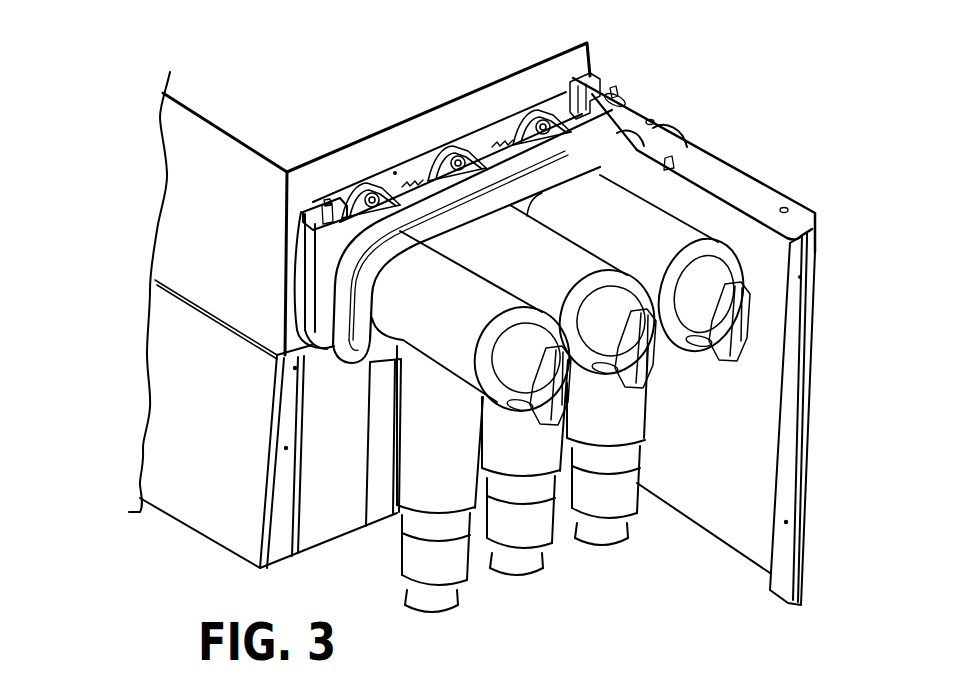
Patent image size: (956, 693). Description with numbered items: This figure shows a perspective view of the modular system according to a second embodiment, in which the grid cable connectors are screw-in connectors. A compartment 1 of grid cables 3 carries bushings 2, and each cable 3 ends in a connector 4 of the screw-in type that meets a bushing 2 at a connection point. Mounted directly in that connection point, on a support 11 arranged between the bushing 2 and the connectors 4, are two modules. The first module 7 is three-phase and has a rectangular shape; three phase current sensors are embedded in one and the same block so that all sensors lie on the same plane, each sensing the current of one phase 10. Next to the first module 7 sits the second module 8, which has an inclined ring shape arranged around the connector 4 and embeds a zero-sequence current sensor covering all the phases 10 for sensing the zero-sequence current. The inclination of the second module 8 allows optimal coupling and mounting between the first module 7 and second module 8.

The compartment 1 is at (320, 428).
The bushing 2 is at (413, 176).
The grid cable 3 is at (607, 510).
The connector 4 is at (633, 230).
The first module 7 is at (623, 97).
The second module 8 is at (610, 157).
The phase 10 is at (350, 192).
The support 11 is at (283, 232).